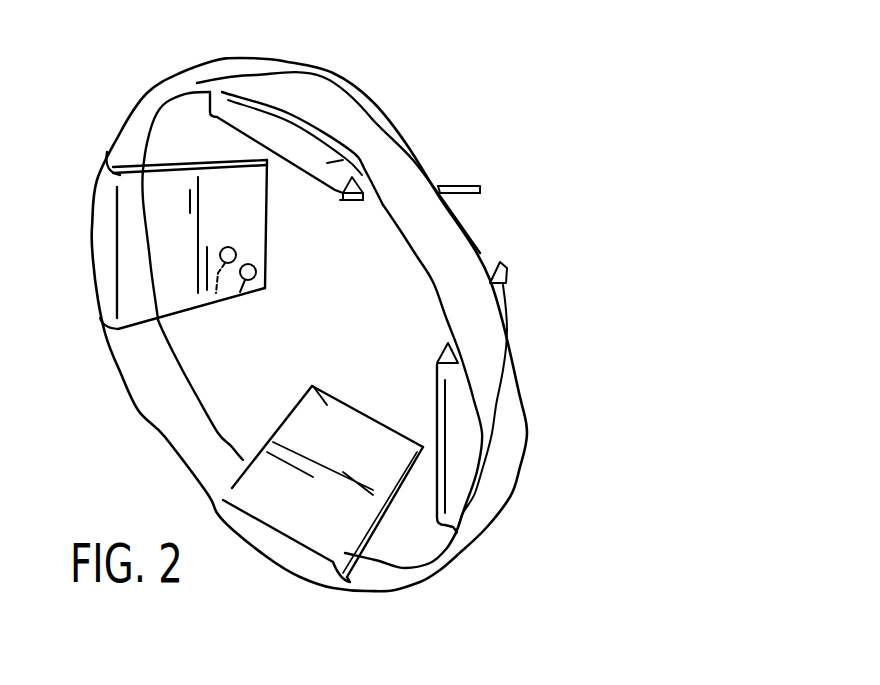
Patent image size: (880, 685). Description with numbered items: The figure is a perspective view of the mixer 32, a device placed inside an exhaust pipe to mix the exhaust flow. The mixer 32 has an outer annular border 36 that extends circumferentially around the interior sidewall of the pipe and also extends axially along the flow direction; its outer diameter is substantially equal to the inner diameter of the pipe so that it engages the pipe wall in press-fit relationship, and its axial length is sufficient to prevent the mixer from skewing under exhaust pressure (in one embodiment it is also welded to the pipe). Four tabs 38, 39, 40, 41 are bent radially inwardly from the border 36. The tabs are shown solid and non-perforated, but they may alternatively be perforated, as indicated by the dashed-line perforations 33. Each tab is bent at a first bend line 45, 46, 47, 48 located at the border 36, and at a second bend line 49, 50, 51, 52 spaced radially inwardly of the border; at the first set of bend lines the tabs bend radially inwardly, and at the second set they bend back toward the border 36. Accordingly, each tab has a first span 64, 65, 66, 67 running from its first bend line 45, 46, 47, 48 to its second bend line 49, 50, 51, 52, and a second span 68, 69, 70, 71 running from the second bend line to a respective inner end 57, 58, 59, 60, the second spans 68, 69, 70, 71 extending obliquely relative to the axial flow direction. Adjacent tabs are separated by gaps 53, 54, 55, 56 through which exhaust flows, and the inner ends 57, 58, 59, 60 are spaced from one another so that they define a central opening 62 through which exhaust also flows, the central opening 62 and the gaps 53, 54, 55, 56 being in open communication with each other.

The mixer 32 is at (241, 57).
The perforations 33 is at (226, 300).
The outer annular border 36 is at (273, 80).
The tab 38 is at (438, 174).
The tab 39 is at (500, 287).
The tab 40 is at (313, 386).
The tab 41 is at (262, 256).
The first bend line 45 is at (290, 117).
The first bend line 46 is at (473, 413).
The first bend line 47 is at (320, 585).
The first bend line 48 is at (93, 257).
The second bend line 49 is at (283, 155).
The second bend line 50 is at (437, 433).
The second bend line 51 is at (307, 550).
The second bend line 52 is at (117, 240).
The gap 53 is at (396, 304).
The gap 54 is at (422, 547).
The gap 55 is at (250, 393).
The gap 56 is at (188, 158).
The inner end 57 is at (480, 181).
The inner end 58 is at (506, 276).
The inner end 59 is at (360, 407).
The inner end 60 is at (262, 250).
The central opening 62 is at (345, 347).
The first span 64 is at (340, 162).
The first span 65 is at (463, 470).
The first span 66 is at (253, 532).
The first span 67 is at (117, 209).
The second span 68 is at (362, 198).
The second span 69 is at (443, 352).
The second span 70 is at (233, 485).
The second span 71 is at (137, 297).